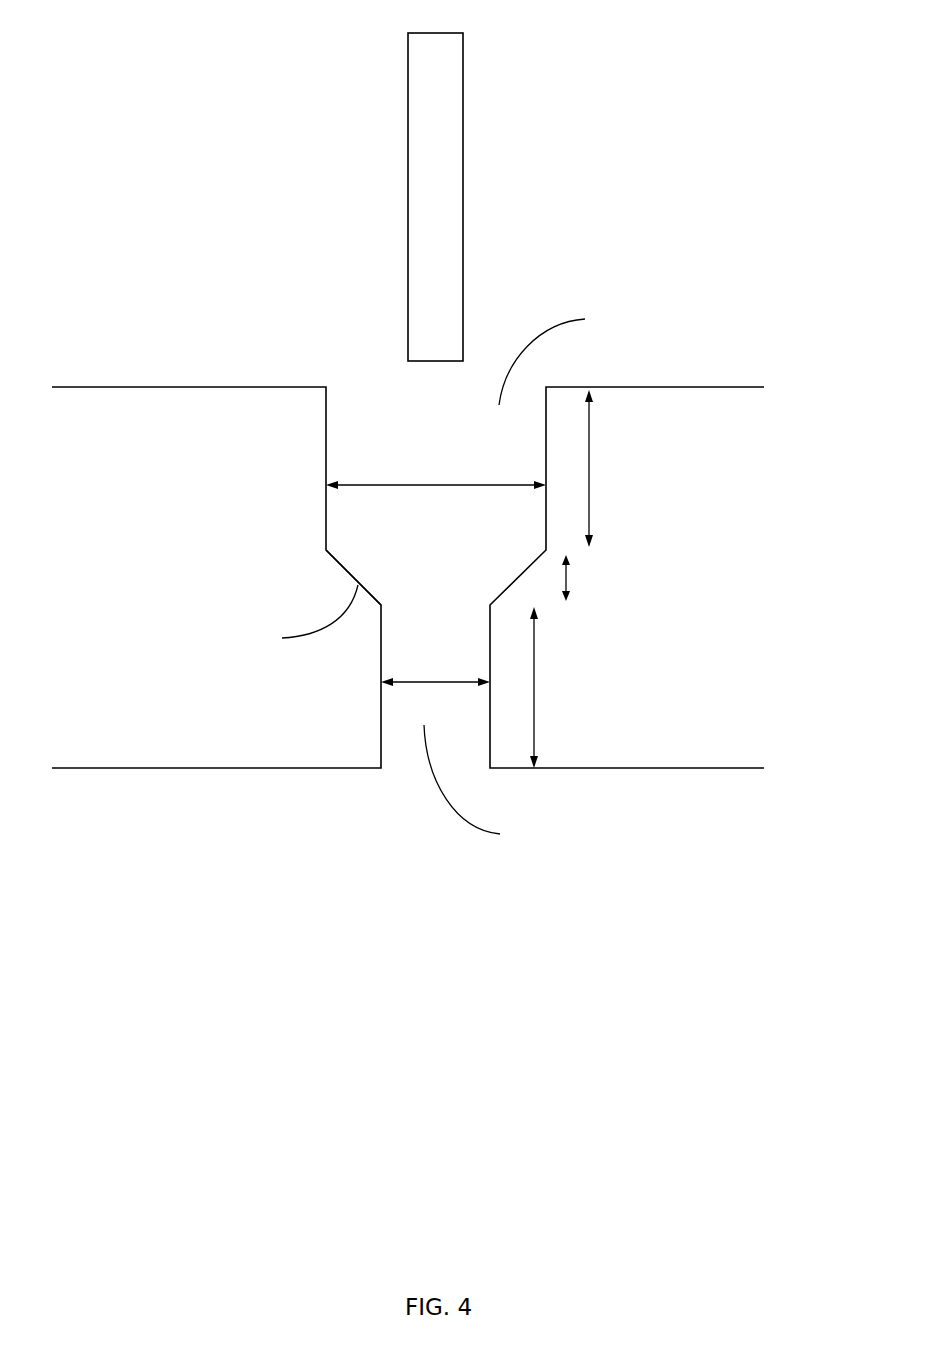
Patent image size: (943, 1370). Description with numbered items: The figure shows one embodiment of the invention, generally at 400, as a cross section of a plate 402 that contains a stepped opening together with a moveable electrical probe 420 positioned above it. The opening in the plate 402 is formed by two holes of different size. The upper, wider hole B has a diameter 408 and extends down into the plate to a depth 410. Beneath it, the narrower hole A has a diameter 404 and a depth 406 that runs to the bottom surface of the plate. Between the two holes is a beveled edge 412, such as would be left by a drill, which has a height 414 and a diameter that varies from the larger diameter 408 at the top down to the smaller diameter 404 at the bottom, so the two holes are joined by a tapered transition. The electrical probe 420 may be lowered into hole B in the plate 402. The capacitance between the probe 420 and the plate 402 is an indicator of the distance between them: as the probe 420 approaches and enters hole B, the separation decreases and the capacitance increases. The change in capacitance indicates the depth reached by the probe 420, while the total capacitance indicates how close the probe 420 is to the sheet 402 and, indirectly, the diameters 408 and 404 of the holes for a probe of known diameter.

The embodiment of the invention 400 is at (713, 60).
The plate 402 is at (408, 577).
The diameter of first hole 404 is at (435, 668).
The depth of first hole 406 is at (555, 687).
The diameter of second hole 408 is at (436, 471).
The depth of second hole 410 is at (610, 468).
The beveled edge 412 is at (338, 565).
The height of beveled edge 414 is at (587, 578).
The electrical probe 420 is at (462, 197).